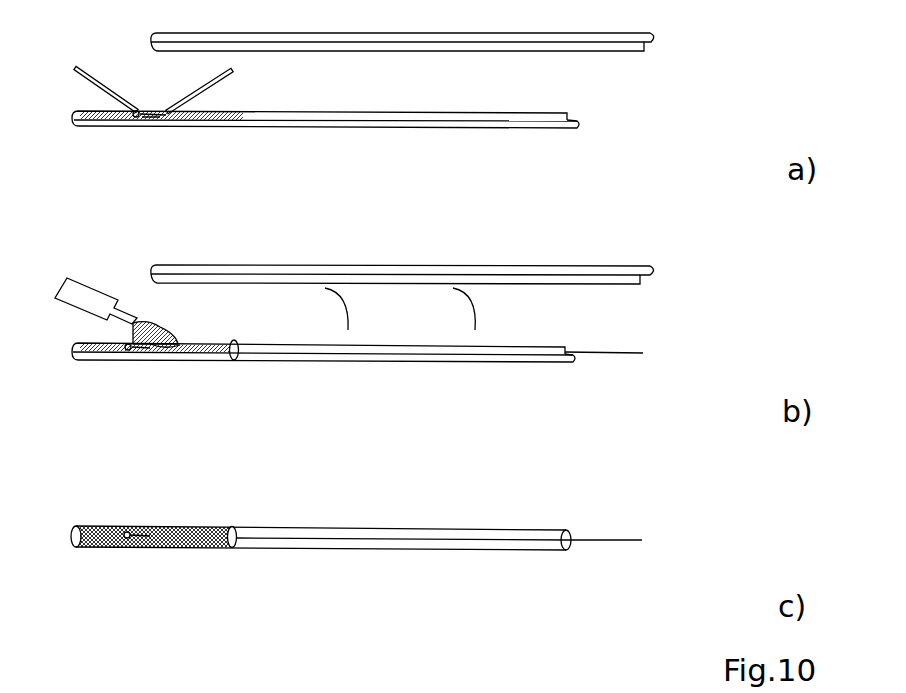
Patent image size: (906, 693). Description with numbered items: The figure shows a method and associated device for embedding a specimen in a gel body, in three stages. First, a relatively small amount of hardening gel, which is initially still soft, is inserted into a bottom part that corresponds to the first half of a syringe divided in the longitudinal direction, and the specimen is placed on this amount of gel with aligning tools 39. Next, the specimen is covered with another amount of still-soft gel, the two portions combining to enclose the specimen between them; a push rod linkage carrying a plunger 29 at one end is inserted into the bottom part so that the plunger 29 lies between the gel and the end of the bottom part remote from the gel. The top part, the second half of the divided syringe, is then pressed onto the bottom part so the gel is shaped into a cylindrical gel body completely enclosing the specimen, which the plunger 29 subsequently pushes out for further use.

The plunger 29 is at (250, 362).
The aligning tools 39 is at (205, 80).